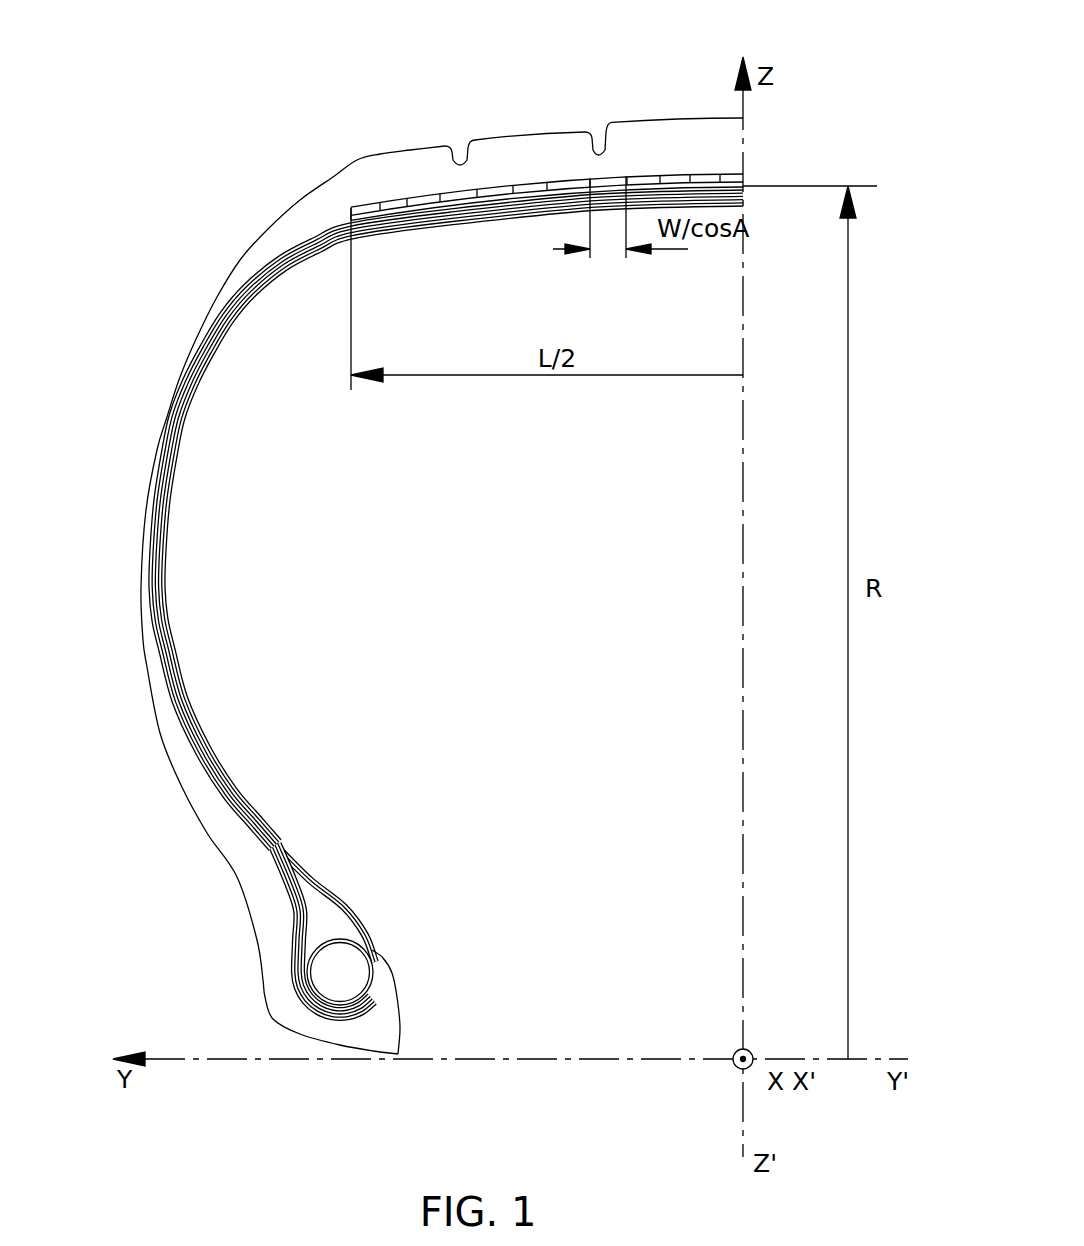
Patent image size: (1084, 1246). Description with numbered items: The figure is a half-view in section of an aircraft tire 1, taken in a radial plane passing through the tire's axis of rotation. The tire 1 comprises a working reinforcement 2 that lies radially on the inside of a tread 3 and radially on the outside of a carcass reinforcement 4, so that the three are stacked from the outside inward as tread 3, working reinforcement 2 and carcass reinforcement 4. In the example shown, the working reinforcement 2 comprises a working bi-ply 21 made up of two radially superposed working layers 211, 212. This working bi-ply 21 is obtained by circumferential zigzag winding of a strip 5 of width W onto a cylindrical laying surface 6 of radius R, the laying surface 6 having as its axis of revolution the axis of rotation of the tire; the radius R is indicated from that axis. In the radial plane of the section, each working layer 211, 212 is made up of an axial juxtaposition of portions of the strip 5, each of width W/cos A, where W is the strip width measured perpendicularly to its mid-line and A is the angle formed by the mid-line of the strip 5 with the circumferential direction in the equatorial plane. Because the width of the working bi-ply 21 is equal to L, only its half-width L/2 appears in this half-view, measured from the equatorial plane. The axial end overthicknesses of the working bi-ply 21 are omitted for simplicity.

The aircraft tire 1 is at (155, 217).
The working reinforcement 2 is at (559, 98).
The tread 3 is at (668, 118).
The carcass reinforcement 4 is at (178, 455).
The strip 5 is at (630, 145).
The cylindrical laying surface 6 is at (797, 190).
The working bi-ply 21 is at (630, 162).
The working layer 211 is at (745, 184).
The working layer 212 is at (745, 177).